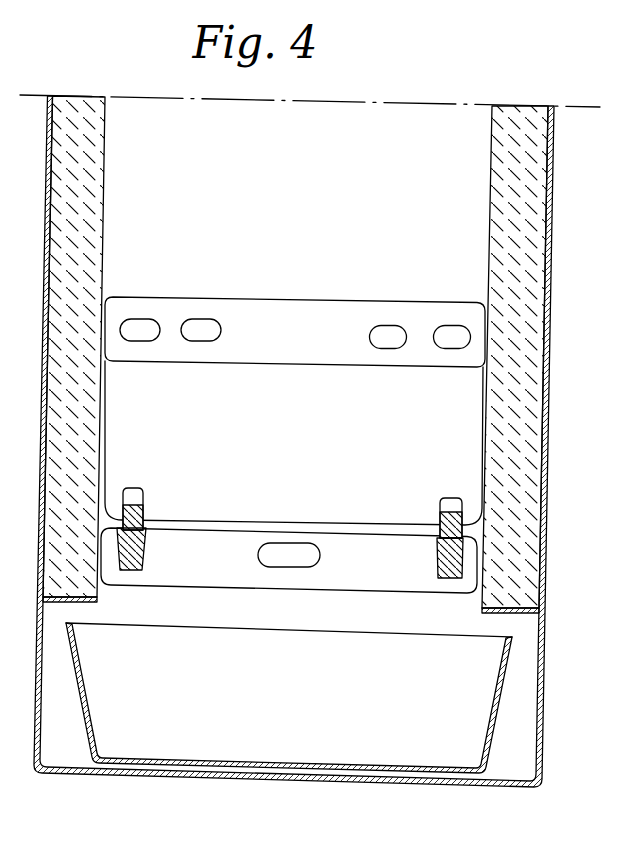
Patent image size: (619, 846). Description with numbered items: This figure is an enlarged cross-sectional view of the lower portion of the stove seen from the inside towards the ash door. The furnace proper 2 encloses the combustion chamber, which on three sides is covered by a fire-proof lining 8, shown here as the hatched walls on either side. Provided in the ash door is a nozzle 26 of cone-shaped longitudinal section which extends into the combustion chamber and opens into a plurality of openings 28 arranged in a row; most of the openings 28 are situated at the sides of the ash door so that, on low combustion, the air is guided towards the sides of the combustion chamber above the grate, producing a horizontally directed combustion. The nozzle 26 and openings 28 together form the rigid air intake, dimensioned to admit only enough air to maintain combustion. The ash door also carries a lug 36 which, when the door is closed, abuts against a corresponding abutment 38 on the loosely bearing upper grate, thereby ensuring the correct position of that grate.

The furnace proper 2 is at (404, 124).
The fire-proof lining 8 is at (542, 213).
The nozzle 26 is at (420, 314).
The openings 28 is at (197, 338).
The lug 36 is at (468, 455).
The abutment 38 is at (450, 529).